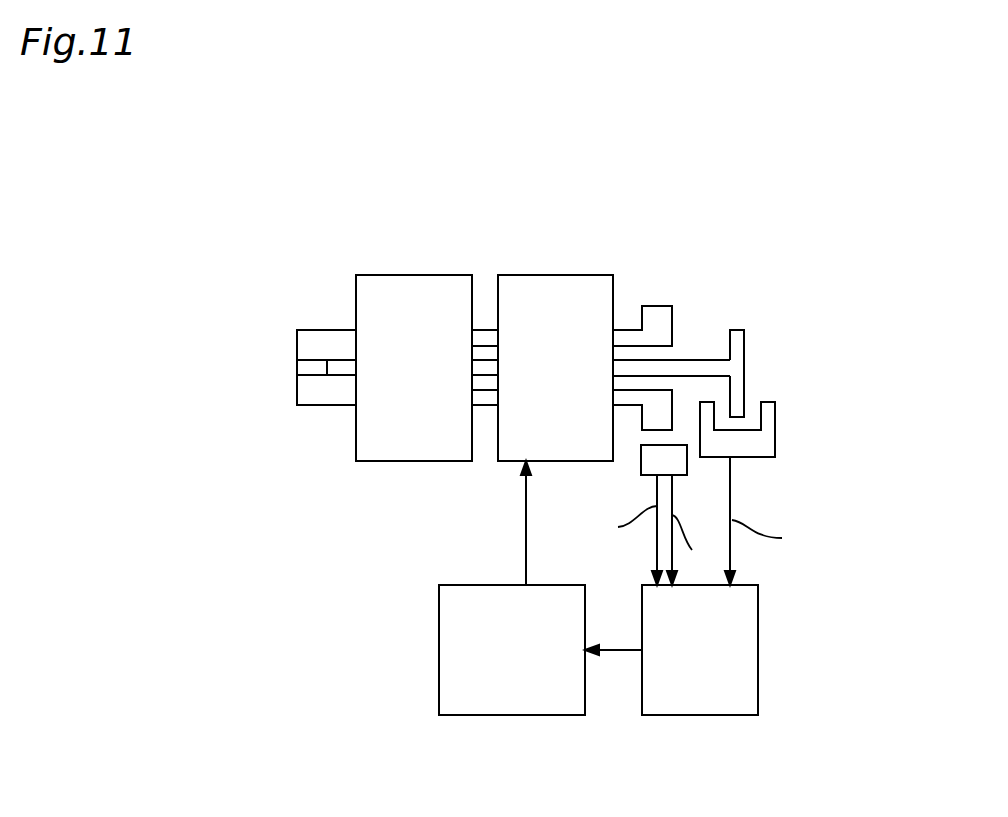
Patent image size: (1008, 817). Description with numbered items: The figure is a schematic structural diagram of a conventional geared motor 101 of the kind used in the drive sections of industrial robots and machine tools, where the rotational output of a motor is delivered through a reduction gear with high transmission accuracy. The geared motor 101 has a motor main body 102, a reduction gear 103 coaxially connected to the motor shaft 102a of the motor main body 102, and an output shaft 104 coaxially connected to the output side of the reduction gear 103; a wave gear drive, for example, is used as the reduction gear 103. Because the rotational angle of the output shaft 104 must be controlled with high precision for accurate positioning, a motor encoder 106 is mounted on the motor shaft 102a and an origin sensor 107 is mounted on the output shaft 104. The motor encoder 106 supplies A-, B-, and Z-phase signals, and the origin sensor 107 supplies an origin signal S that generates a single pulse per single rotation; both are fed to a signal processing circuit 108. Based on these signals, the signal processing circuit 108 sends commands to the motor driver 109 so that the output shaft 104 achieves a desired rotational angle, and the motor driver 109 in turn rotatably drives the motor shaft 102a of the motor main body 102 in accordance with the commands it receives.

The geared motor 101 is at (762, 250).
The motor main body 102 is at (528, 290).
The motor shaft 102a is at (630, 338).
The reduction gear 103 is at (411, 290).
The output shaft 104 is at (315, 338).
The motor encoder 106 is at (633, 448).
The origin sensor 107 is at (782, 413).
The signal processing circuit 108 is at (758, 640).
The motor driver 109 is at (439, 625).